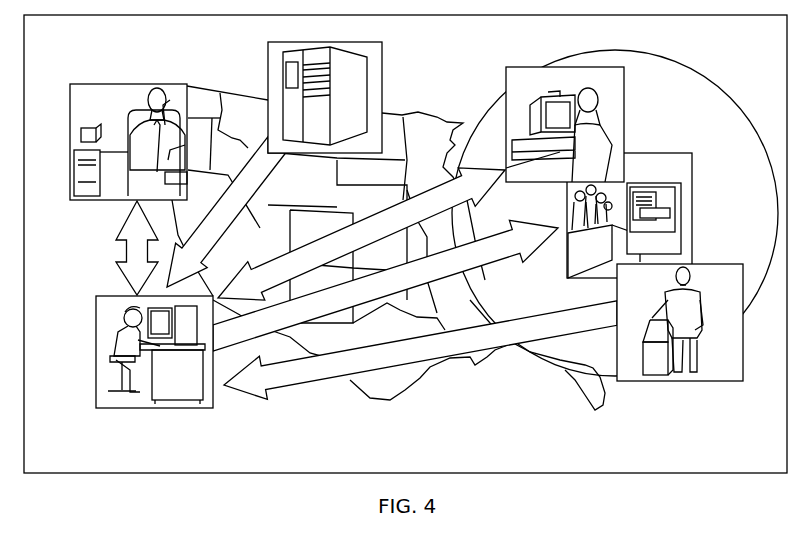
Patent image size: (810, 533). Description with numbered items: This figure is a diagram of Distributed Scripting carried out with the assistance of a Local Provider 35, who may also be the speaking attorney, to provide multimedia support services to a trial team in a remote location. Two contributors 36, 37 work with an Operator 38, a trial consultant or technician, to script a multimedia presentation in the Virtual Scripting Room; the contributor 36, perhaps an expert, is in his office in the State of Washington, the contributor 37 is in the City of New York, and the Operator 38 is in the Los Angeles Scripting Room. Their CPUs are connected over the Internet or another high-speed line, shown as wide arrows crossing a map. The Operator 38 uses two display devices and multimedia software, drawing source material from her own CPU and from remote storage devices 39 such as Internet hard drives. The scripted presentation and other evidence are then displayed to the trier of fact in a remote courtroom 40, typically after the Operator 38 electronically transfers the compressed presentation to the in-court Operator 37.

The Local Provider 35 is at (716, 279).
The contributor 36 is at (108, 103).
The contributor 37 is at (532, 73).
The Operator 38 is at (112, 310).
The remote storage devices 39 is at (268, 53).
The remote courtroom 40 is at (670, 200).